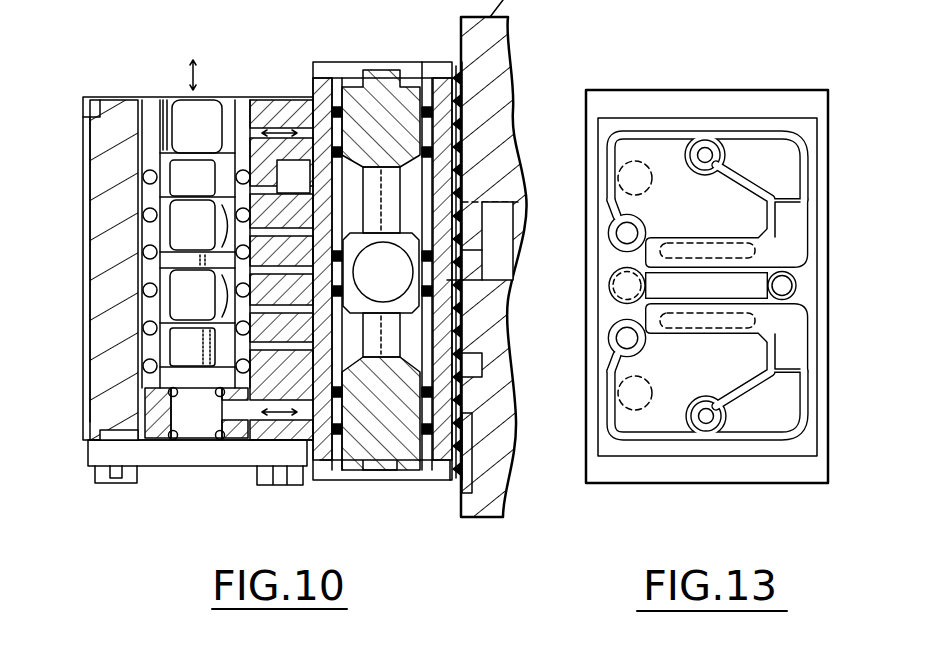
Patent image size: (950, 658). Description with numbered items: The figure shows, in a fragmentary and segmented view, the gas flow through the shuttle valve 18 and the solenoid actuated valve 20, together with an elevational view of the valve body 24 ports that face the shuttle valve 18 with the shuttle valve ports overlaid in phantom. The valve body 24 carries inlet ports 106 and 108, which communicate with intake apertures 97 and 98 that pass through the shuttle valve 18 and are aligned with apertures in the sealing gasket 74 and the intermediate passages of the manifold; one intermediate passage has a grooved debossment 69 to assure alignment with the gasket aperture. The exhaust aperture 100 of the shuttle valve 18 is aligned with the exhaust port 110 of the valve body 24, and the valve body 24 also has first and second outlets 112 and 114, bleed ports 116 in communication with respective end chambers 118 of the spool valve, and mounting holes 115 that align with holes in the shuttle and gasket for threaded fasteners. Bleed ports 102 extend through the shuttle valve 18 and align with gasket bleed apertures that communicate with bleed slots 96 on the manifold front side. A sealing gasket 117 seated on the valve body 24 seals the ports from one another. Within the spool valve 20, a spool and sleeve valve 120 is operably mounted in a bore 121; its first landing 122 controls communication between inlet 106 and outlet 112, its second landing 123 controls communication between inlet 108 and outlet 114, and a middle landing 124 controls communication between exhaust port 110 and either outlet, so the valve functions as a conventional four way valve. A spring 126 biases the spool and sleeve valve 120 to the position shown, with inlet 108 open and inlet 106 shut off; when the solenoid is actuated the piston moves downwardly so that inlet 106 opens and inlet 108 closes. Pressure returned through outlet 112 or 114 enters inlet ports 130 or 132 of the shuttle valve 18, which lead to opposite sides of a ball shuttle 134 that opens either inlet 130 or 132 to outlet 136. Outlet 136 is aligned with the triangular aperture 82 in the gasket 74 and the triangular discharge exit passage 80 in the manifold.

In FIG. 10, the shuttle valve 18 is at (426, 80).
In FIG. 10, the solenoid actuated valve 20 is at (271, 51).
In FIG. 10, the valve body 24 is at (270, 97).
In FIG. 13, the valve body 24 is at (752, 477).
In FIG. 10, the grooved debossment 69 is at (474, 363).
In FIG. 10, the sealing gasket 74 is at (453, 478).
In FIG. 10, the discharge exit passage 80 is at (478, 250).
In FIG. 10, the triangular aperture 82 is at (518, 204).
In FIG. 10, the bleed slots 96 is at (490, 62).
In FIG. 13, the intake aperture 97 is at (630, 398).
In FIG. 13, the intake aperture 98 is at (632, 162).
In FIG. 13, the exhaust port 100 is at (648, 290).
In FIG. 10, the bleed ports 102 is at (316, 185).
In FIG. 10, the inlet port 106 is at (290, 355).
In FIG. 13, the inlet port 106 is at (653, 458).
In FIG. 10, the inlet port 108 is at (265, 197).
In FIG. 13, the inlet port 108 is at (658, 150).
In FIG. 10, the exhaust port 110 is at (255, 305).
In FIG. 13, the exhaust port 110 is at (680, 300).
In FIG. 10, the first outlet 112 is at (189, 346).
In FIG. 13, the first outlet 112 is at (793, 352).
In FIG. 10, the second outlet 114 is at (255, 231).
In FIG. 13, the second outlet 114 is at (788, 245).
In FIG. 13, the mounting holes 115 is at (632, 237).
In FIG. 10, the bleed ports 116 is at (262, 125).
In FIG. 13, the bleed ports 116 is at (706, 155).
In FIG. 13, the sealing gasket 117 is at (806, 220).
In FIG. 10, the end chambers 118 is at (172, 97).
In FIG. 10, the spool and sleeve valve 120 is at (140, 372).
In FIG. 10, the bore 121 is at (165, 306).
In FIG. 10, the first landing 122 is at (165, 343).
In FIG. 10, the second landing 123 is at (145, 170).
In FIG. 10, the middle landing 124 is at (170, 258).
In FIG. 10, the spring 126 is at (187, 437).
In FIG. 10, the inlet port 130 is at (347, 420).
In FIG. 13, the inlet port 130 is at (708, 327).
In FIG. 10, the inlet port 132 is at (351, 175).
In FIG. 13, the inlet port 132 is at (718, 247).
In FIG. 10, the ball shuttle 134 is at (386, 294).
In FIG. 10, the outlet 136 is at (459, 282).